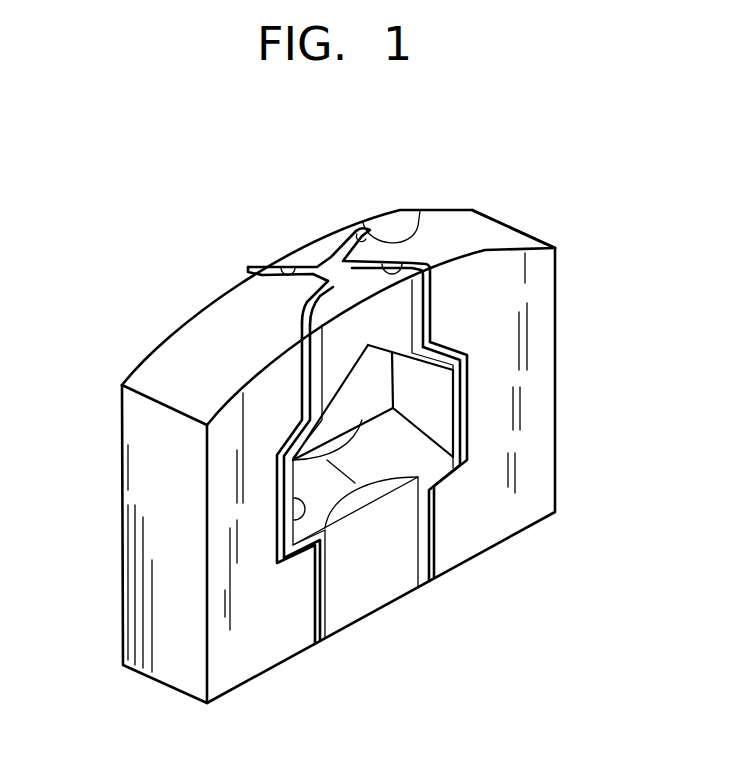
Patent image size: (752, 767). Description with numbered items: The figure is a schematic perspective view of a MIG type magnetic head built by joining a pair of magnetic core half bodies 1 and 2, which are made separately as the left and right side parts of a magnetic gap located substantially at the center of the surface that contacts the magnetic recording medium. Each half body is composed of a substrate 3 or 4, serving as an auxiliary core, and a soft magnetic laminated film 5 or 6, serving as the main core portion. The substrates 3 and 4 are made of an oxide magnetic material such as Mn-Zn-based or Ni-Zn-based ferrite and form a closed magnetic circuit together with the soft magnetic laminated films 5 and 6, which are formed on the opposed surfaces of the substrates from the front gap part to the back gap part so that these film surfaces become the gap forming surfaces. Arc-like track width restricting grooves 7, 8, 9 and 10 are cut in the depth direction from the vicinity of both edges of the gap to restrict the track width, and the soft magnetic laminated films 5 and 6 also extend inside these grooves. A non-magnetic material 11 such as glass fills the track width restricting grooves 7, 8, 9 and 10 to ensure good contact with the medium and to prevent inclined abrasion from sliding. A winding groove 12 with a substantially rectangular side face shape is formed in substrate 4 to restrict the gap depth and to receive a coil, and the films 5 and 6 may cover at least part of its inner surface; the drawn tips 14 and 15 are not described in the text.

The half body 1 is at (282, 643).
The half body 2 is at (535, 510).
The substrate 3 is at (156, 379).
The substrate 4 is at (510, 240).
The soft magnetic laminated film 5 is at (281, 260).
The soft magnetic laminated film 6 is at (398, 252).
The track width restricting groove 7 is at (282, 276).
The track width restricting groove 8 is at (300, 322).
The track width restricting groove 9 is at (330, 258).
The track width restricting groove 10 is at (383, 254).
The non-magnetic material 11 is at (311, 252).
The winding groove 12 is at (303, 518).
The left lip tip 14 is at (262, 265).
The right lip tip 15 is at (380, 230).